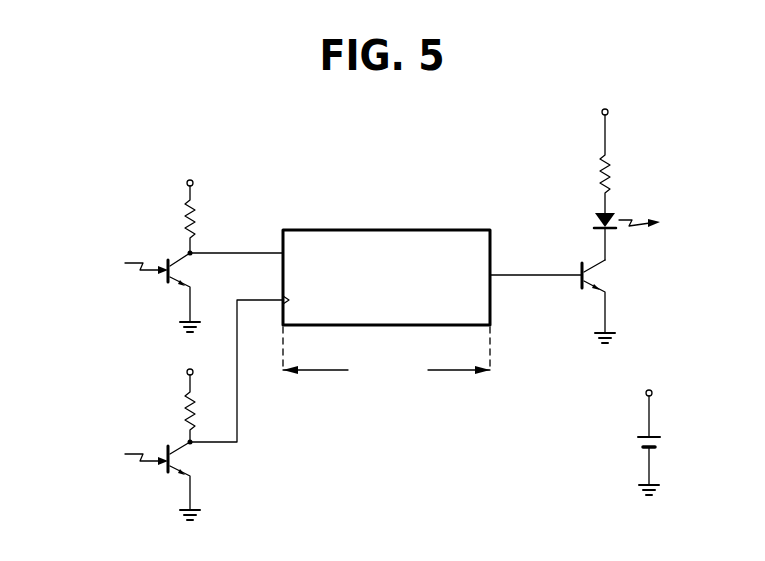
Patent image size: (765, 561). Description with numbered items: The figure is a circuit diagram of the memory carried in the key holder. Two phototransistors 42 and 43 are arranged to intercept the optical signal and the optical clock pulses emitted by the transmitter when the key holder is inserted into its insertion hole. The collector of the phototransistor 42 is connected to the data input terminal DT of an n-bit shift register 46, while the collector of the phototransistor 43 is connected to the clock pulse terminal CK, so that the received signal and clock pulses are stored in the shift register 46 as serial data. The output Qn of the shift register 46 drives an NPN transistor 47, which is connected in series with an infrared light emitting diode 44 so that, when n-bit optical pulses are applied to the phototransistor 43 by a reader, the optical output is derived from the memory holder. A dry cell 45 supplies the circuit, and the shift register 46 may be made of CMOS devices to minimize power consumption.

The phototransistor 42 is at (182, 268).
The phototransistor 43 is at (186, 459).
The infrared light emitting diode 44 is at (593, 219).
The dry cell 45 is at (637, 441).
The n-bit shift register 46 is at (393, 230).
The NPN transistor 47 is at (592, 276).